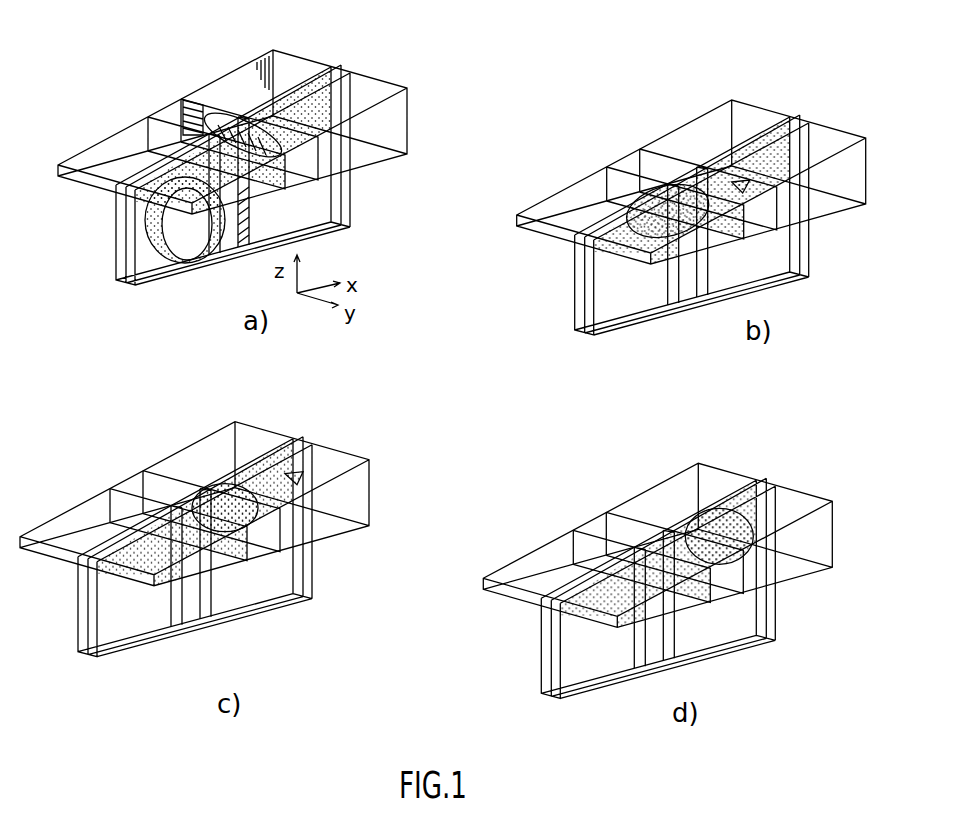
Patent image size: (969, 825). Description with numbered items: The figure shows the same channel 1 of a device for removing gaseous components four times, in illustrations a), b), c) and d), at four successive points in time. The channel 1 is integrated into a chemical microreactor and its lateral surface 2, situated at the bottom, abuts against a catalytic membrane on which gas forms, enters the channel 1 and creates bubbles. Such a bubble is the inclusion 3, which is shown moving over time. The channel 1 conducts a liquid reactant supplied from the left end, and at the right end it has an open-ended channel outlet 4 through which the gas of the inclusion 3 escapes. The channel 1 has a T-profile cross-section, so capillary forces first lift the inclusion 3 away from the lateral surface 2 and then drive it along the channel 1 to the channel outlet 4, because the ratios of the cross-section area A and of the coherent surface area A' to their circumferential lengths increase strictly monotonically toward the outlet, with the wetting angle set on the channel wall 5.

The channel 1 is at (443, 353).
The lateral surface 2 is at (323, 232).
The inclusion 3 is at (172, 235).
The channel outlet 4 is at (387, 128).
The channel wall 5 is at (255, 68).
The cross-section area A is at (228, 102).
The coherent surface area A' is at (321, 208).